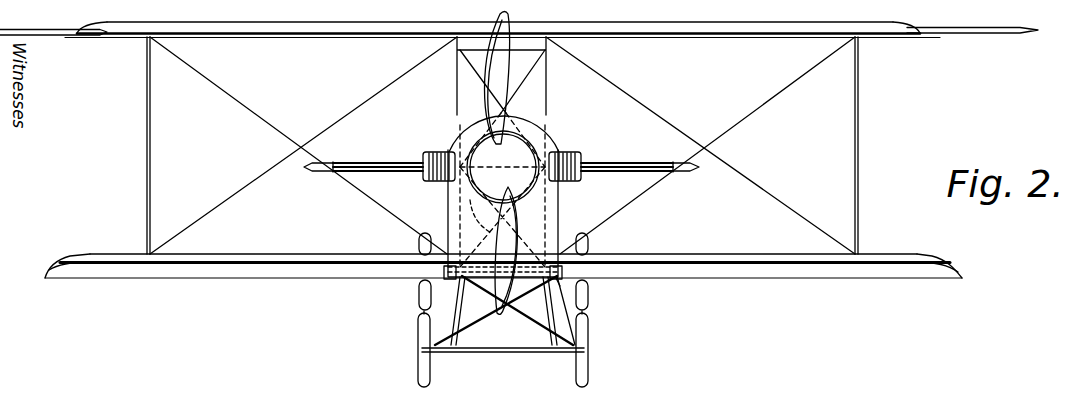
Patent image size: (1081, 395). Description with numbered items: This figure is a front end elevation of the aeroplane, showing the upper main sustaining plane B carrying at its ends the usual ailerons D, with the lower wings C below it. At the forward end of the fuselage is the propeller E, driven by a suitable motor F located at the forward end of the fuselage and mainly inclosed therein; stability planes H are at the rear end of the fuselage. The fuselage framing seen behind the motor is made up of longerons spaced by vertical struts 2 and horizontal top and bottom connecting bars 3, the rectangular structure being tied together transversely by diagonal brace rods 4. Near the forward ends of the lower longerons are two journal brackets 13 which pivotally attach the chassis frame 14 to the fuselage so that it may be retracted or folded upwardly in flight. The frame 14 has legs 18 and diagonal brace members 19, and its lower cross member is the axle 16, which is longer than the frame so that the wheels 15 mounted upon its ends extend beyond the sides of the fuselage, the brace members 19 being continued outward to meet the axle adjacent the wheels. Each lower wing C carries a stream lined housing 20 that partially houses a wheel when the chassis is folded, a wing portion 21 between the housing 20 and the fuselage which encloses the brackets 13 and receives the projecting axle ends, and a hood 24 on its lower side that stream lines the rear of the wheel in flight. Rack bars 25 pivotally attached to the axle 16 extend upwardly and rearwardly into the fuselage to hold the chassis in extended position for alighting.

The upper main sustaining plane B is at (730, 38).
The lower wing C is at (735, 268).
The aileron D is at (35, 39).
The propeller E is at (512, 226).
The motor F is at (435, 155).
The stability plane H is at (363, 162).
The vertical strut 2 is at (458, 222).
The horizontal connecting bar 3 is at (505, 165).
The diagonal brace rod 4 is at (480, 216).
The journal bracket 13 is at (565, 289).
The chassis frame 14 is at (538, 330).
The wheel 15 is at (418, 338).
The axle 16 is at (483, 353).
The leg 18 is at (460, 300).
The diagonal brace member 19 is at (518, 320).
The housing 20 is at (418, 241).
The wing portion 21 is at (438, 279).
The hood 24 is at (418, 291).
The rack bar 25 is at (425, 313).